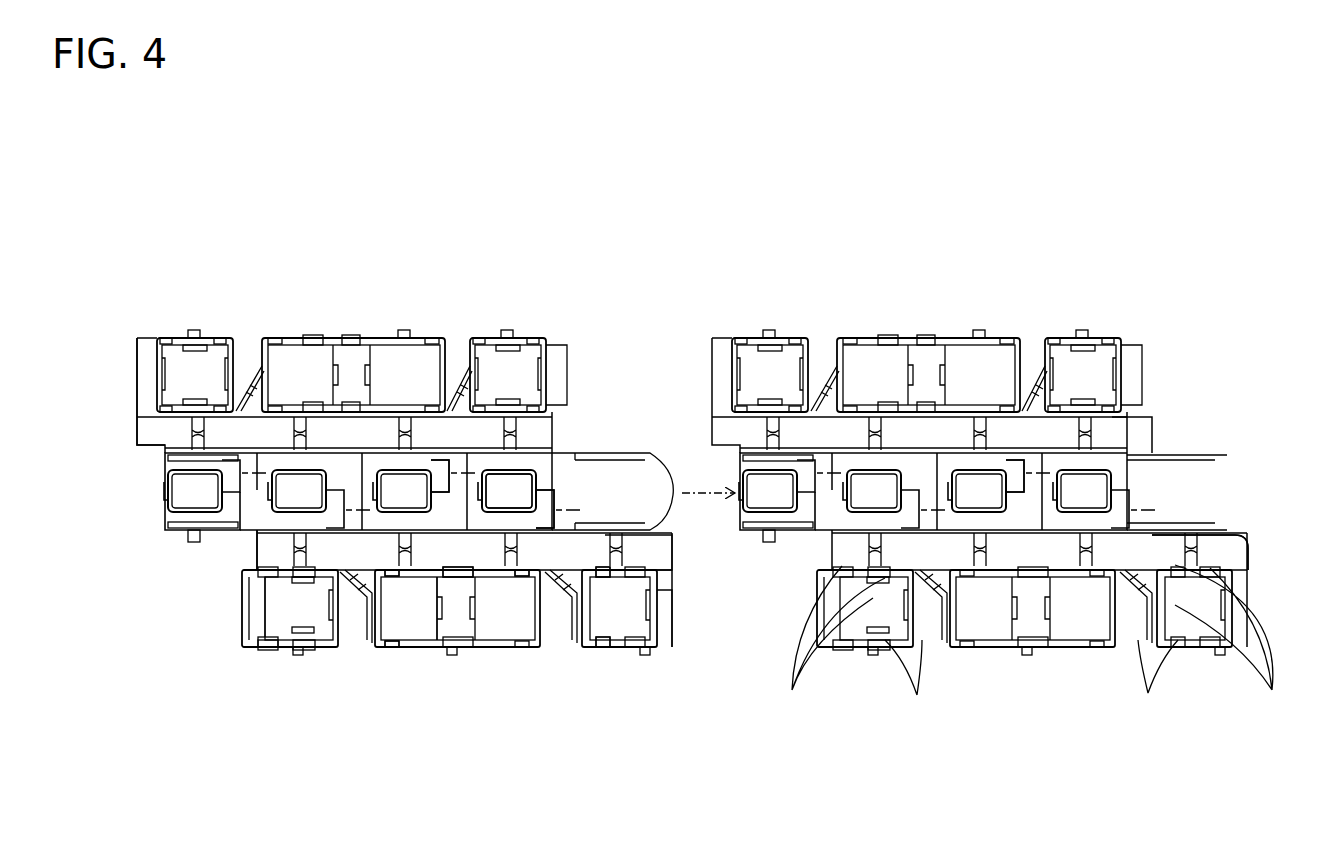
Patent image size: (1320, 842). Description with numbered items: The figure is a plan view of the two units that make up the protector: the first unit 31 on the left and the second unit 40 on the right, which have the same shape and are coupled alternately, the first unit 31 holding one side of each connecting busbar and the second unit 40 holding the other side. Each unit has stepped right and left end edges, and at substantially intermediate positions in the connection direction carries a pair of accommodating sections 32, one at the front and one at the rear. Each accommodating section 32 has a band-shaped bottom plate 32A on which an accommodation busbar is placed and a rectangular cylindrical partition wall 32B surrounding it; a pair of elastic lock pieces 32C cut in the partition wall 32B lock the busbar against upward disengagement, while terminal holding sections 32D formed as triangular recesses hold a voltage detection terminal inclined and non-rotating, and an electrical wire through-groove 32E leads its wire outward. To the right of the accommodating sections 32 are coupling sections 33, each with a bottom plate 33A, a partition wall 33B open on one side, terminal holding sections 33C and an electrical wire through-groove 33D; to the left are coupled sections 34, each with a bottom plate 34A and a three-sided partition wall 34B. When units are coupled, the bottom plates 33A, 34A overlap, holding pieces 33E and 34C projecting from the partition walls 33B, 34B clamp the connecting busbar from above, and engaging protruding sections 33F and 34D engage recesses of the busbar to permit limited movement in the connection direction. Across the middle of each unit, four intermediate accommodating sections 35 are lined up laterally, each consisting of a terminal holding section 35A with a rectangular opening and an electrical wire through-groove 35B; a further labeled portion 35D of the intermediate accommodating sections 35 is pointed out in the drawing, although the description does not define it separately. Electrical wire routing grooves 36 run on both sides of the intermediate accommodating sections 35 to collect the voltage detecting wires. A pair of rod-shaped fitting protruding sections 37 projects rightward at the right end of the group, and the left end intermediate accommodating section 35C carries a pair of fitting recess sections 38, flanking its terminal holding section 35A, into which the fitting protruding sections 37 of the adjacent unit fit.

The first unit 31 is at (292, 308).
The second unit 40 is at (888, 302).
The accommodating section 32 is at (354, 325).
The bottom plate 32A is at (446, 600).
The partition wall 32B is at (525, 583).
The lock piece 32C is at (470, 580).
The terminal holding section 32D is at (405, 572).
The electrical wire through-groove 32E is at (350, 582).
The coupling section 33 is at (524, 328).
The bottom plate 33A is at (660, 630).
The partition wall 33B is at (645, 575).
The terminal holding section 33C is at (600, 585).
The electrical wire through-groove 33D is at (555, 585).
The holding piece 33E is at (1234, 646).
The engaging protruding section 33F is at (1154, 683).
The coupled section 34 is at (180, 328).
The bottom plate 34A is at (250, 600).
The partition wall 34B is at (262, 632).
The holding piece 34C is at (825, 642).
The engaging protruding section 34D is at (914, 683).
The intermediate accommodating section 35 is at (660, 335).
The terminal holding section 35A is at (530, 487).
The electrical wire through-groove 35B is at (570, 500).
The left end intermediate accommodating section 35C is at (148, 492).
The terminal link block 35D is at (431, 462).
The electrical wire routing groove 36 is at (150, 430).
The fitting protruding section 37 is at (660, 456).
The fitting recess section 38 is at (185, 456).